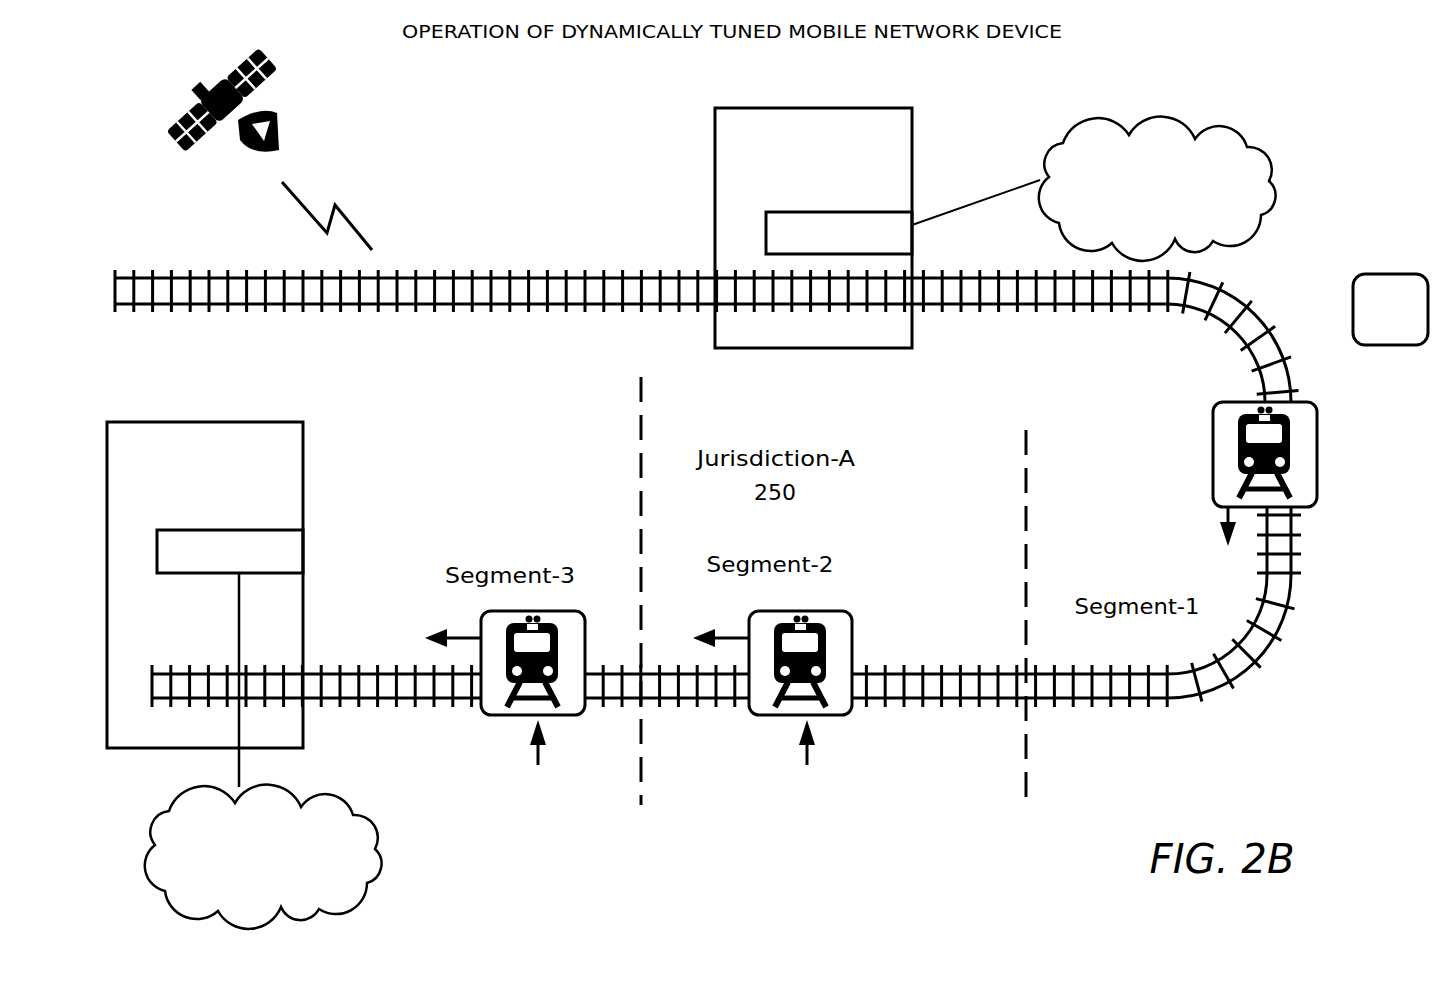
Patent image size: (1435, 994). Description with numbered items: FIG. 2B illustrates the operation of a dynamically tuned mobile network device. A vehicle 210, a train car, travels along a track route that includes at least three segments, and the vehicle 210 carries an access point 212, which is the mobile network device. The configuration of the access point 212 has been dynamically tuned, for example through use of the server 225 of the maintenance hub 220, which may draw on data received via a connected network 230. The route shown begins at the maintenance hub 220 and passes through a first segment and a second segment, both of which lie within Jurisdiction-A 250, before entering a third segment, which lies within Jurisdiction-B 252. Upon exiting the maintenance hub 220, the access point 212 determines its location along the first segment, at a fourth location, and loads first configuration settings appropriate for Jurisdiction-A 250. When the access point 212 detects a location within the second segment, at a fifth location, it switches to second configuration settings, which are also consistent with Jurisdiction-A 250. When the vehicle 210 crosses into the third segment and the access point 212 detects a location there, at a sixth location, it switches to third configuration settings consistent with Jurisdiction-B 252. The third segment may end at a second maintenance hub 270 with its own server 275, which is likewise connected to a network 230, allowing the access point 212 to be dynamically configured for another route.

The Jurisdiction-A 250 is at (184, 112).
The maintenance hub 220 is at (795, 203).
The server 225 is at (897, 243).
The network 230 is at (710, 523).
The second maintenance hub 270 is at (186, 516).
The server 275 is at (288, 563).
The access point 212 is at (1305, 400).
The vehicle 210 is at (871, 622).
The Jurisdiction-B 252 is at (499, 471).